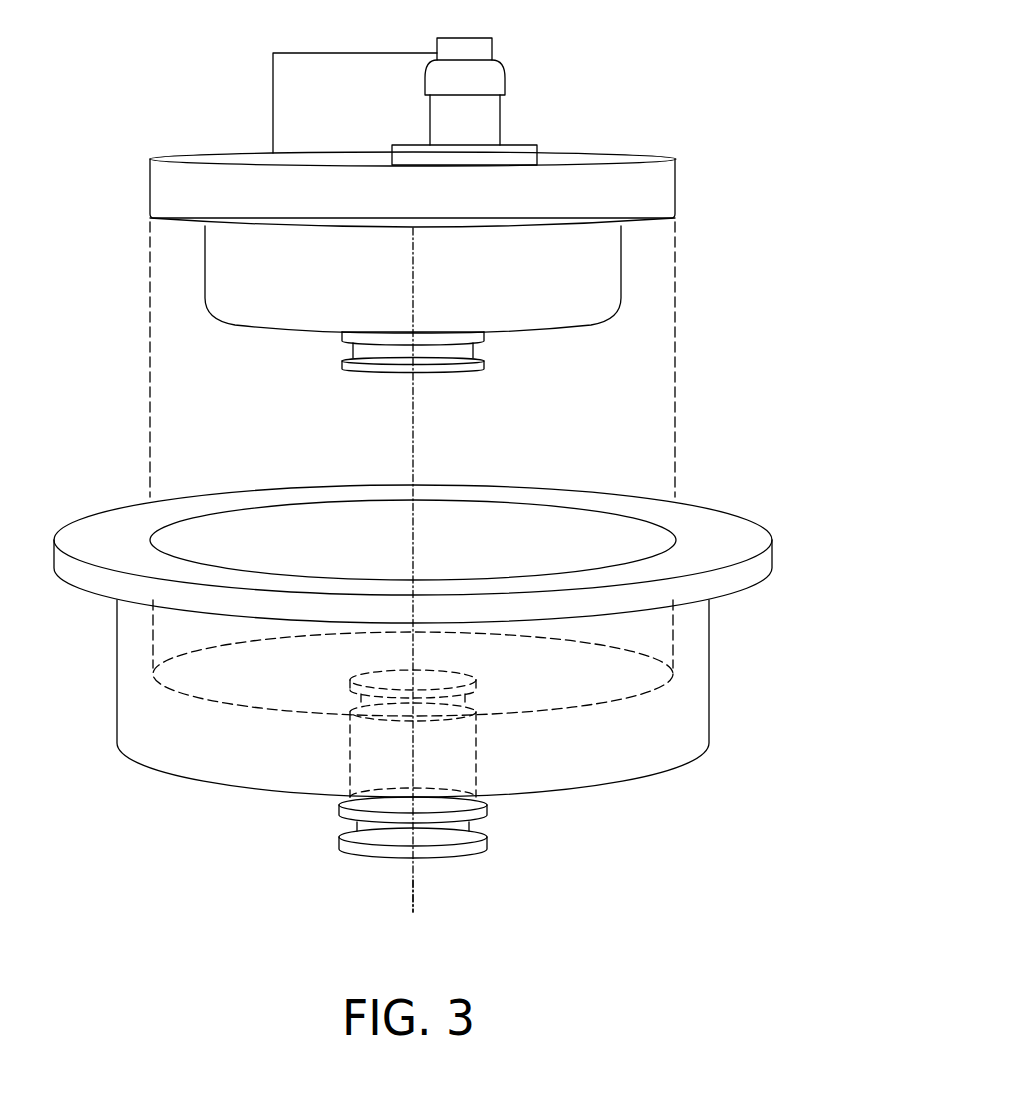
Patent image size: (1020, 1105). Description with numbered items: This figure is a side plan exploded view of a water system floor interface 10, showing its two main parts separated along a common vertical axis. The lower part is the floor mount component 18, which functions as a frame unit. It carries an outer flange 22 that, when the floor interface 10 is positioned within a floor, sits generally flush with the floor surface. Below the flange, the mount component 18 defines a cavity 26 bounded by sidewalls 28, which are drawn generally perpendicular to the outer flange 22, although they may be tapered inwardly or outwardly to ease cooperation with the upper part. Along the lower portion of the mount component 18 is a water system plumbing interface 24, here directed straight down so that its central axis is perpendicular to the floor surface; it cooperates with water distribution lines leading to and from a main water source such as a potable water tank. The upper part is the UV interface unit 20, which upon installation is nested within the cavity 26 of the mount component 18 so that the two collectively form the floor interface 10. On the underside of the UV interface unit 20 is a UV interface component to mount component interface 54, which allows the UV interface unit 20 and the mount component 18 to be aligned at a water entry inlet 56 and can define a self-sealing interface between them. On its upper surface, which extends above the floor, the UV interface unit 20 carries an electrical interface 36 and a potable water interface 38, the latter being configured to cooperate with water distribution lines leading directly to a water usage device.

The water system floor interface 10 is at (826, 110).
The floor mount component 18 is at (794, 678).
The UV interface unit 20 is at (755, 263).
The outer flange 22 is at (733, 535).
The water system plumbing interface 24 is at (482, 826).
The cavity 26 is at (231, 548).
The sidewalls 28 is at (150, 661).
The electrical interface 36 is at (300, 118).
The potable water interface 38 is at (475, 84).
The UV interface component to mount component interface 54 is at (486, 366).
The water entry inlet 56 is at (413, 890).